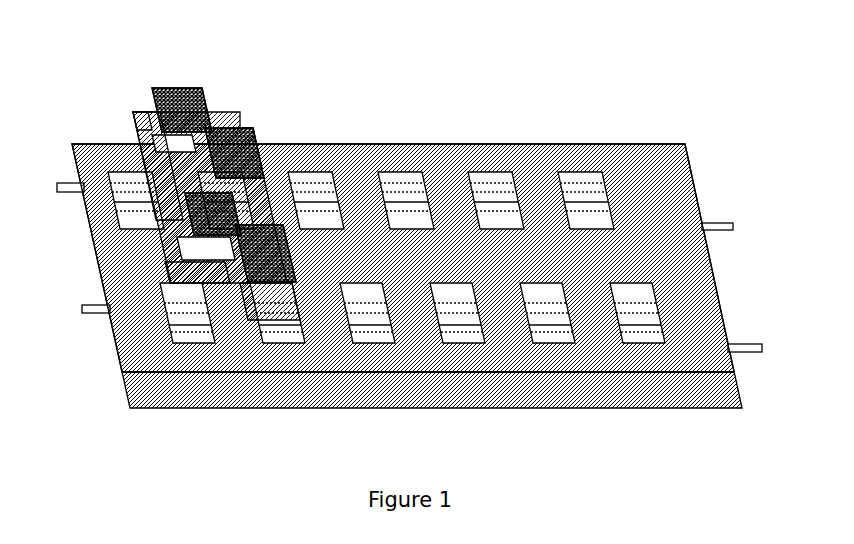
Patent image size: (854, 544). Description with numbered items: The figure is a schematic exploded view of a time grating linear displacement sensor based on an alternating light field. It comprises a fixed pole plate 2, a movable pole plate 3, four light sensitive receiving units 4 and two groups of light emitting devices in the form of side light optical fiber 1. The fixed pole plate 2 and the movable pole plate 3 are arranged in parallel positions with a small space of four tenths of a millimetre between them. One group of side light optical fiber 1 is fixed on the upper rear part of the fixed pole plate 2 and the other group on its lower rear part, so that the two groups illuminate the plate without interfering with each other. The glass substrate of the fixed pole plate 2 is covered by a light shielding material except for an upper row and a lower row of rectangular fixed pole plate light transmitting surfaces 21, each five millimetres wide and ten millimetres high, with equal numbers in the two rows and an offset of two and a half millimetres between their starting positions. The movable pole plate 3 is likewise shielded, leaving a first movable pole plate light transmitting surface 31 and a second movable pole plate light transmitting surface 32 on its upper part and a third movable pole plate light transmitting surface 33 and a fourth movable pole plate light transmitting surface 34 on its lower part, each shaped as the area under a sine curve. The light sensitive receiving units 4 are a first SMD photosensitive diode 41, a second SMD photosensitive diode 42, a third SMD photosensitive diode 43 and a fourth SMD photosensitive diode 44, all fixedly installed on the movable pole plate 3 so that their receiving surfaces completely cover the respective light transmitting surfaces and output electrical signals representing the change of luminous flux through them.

The side light optical fiber 1 is at (413, 241).
The fixed pole plate 2 is at (403, 204).
The fixed pole plate light transmitting surface 21 is at (386, 195).
The movable pole plate 3 is at (210, 160).
The first movable pole plate light transmitting surface 31 is at (140, 128).
The second movable pole plate light transmitting surface 32 is at (97, 98).
The third movable pole plate light transmitting surface 33 is at (197, 358).
The fourth movable pole plate light transmitting surface 34 is at (274, 375).
The light sensitive receiving unit 4 is at (175, 88).
The first SMD photosensitive diode 41 is at (187, 80).
The second SMD photosensitive diode 42 is at (268, 118).
The third SMD photosensitive diode 43 is at (288, 147).
The fourth SMD photosensitive diode 44 is at (293, 346).